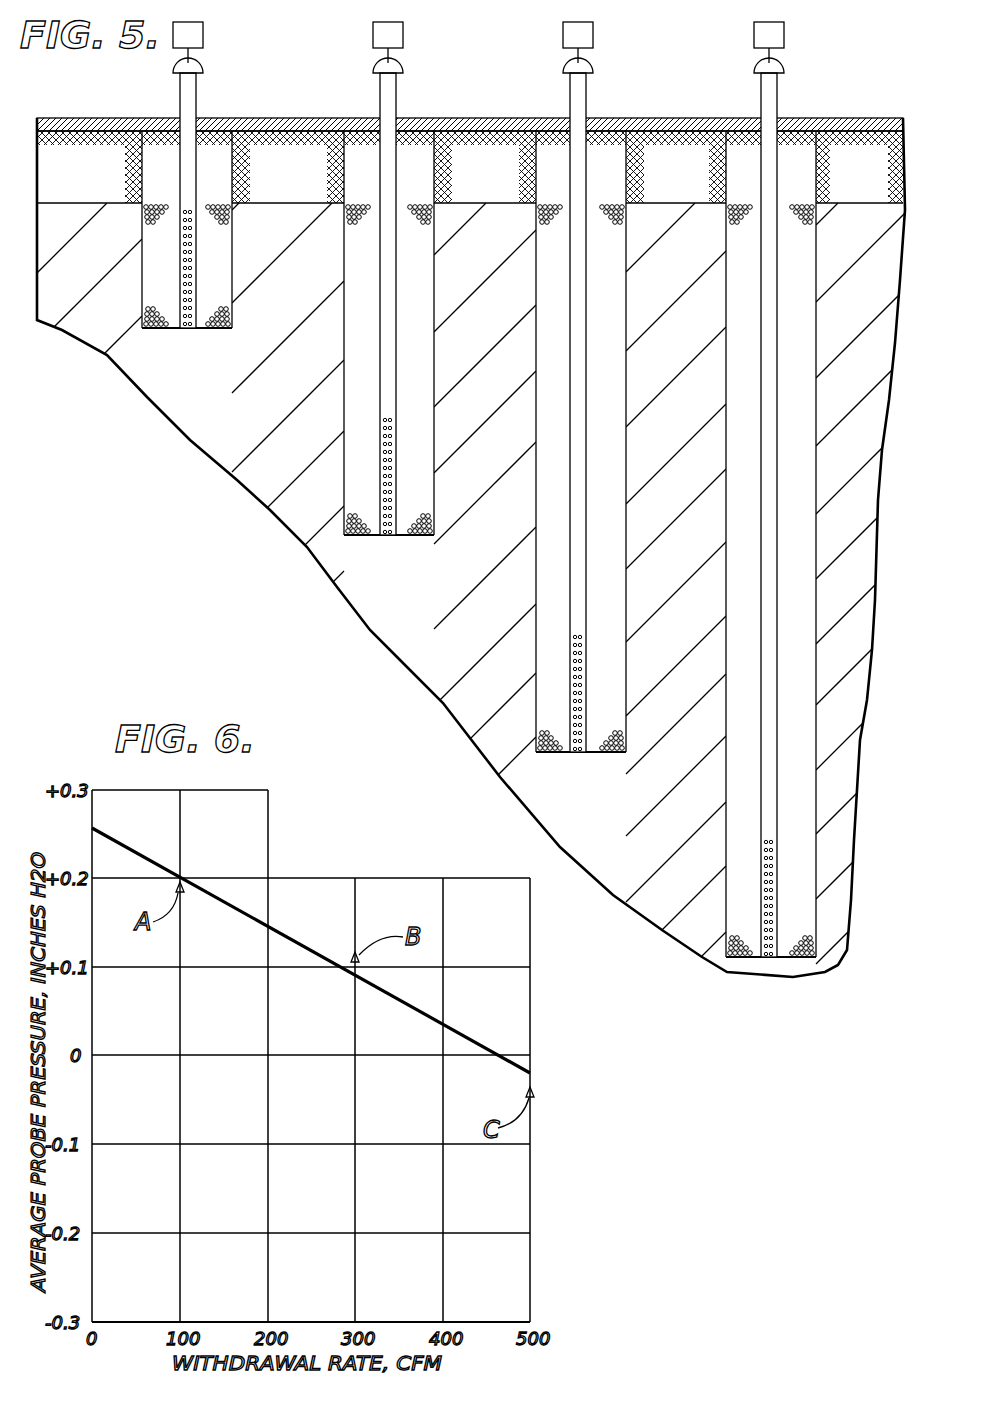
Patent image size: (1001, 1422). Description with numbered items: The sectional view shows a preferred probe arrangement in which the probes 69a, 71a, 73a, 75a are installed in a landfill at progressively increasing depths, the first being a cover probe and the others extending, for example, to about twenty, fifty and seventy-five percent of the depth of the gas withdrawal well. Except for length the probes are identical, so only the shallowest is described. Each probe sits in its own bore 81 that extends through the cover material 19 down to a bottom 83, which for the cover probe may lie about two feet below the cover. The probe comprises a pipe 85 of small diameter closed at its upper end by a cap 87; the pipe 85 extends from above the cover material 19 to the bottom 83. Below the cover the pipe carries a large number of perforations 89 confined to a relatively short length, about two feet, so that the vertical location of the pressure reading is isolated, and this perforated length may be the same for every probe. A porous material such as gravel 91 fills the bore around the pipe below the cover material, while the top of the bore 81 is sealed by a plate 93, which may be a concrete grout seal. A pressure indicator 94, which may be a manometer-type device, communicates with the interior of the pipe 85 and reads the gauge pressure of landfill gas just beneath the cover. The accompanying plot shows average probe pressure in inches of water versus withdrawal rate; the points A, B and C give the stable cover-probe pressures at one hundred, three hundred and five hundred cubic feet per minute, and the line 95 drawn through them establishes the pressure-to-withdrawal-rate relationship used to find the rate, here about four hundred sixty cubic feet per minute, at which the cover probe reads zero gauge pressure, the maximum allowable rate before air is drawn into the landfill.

In FIG. 5, the cover material 19 is at (77, 130).
In FIG. 5, the plate 93 is at (155, 131).
In FIG. 5, the probe 69a is at (215, 106).
In FIG. 5, the probe 71a is at (407, 106).
In FIG. 5, the probe 73a is at (599, 106).
In FIG. 5, the probe 75a is at (792, 106).
In FIG. 5, the bore 81 is at (140, 245).
In FIG. 5, the bottom 83 is at (213, 330).
In FIG. 5, the pipe 85 is at (193, 186).
In FIG. 5, the cap 87 is at (200, 70).
In FIG. 5, the perforations 89 is at (183, 286).
In FIG. 5, the gravel 91 is at (212, 258).
In FIG. 5, the pressure indicator 94 is at (190, 33).
In FIG. 6, the line 95 is at (430, 1016).